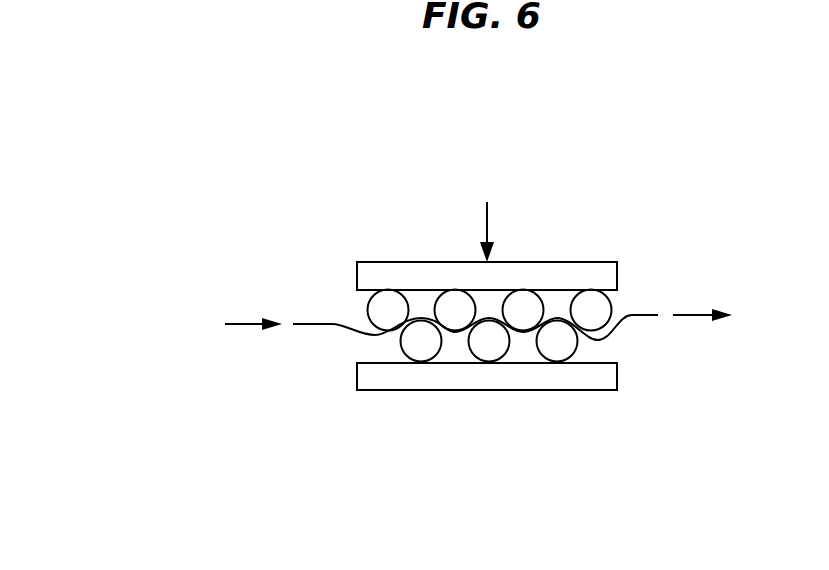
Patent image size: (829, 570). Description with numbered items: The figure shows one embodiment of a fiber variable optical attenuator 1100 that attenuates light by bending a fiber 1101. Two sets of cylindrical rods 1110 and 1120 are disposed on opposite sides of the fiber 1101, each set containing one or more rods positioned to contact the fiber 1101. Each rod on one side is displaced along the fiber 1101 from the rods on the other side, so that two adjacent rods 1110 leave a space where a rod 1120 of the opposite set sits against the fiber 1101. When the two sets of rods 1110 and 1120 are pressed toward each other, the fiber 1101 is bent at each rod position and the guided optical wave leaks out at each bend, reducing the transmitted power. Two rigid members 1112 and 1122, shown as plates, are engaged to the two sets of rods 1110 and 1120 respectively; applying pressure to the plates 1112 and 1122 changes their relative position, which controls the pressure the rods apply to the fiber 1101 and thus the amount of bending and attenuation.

The fiber variable optical attenuator 1100 is at (396, 117).
The fiber 1101 is at (342, 325).
The cylindrical rods 1110 is at (393, 303).
The rigid member 1112 is at (582, 272).
The cylindrical rods 1120 is at (423, 347).
The rigid member 1122 is at (558, 378).